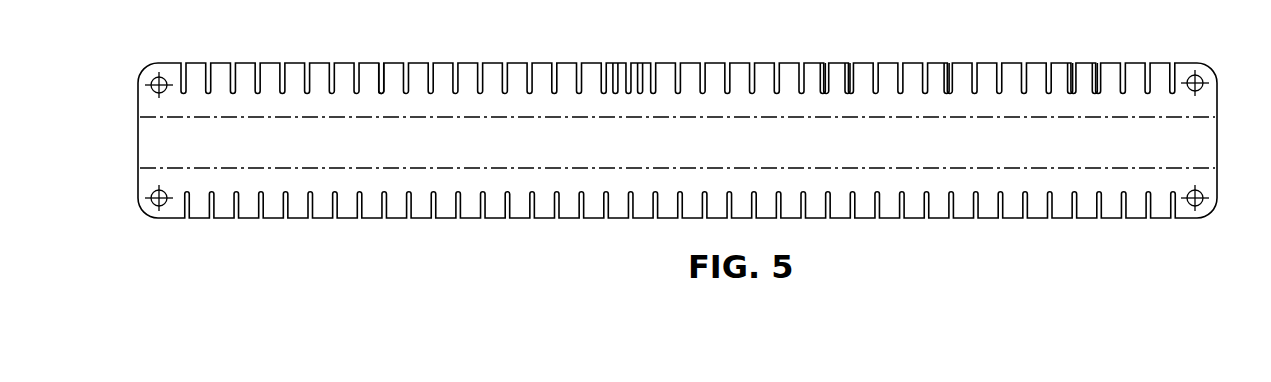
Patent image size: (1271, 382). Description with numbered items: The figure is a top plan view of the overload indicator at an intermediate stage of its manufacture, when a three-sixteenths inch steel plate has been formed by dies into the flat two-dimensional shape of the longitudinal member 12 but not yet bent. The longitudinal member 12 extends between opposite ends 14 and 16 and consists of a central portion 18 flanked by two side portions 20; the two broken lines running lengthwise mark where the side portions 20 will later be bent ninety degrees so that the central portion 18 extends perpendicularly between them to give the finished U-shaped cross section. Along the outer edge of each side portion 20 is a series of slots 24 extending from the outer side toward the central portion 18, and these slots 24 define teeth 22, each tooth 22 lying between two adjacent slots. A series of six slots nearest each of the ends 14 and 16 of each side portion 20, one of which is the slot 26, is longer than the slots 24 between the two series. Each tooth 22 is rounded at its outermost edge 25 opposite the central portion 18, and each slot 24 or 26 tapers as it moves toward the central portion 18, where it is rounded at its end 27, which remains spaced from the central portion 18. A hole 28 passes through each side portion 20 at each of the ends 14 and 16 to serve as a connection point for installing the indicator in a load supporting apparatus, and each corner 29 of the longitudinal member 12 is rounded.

The longitudinal member 12 is at (309, 138).
The end 14 is at (138, 138).
The end 16 is at (1218, 140).
The central portion 18 is at (493, 140).
The side portions 20 is at (767, 178).
The teeth 22 is at (615, 73).
The slots 24 is at (822, 82).
The outermost edge 25 is at (391, 64).
The slot 26 is at (1070, 76).
The end 27 is at (948, 90).
The hole 28 is at (163, 192).
The corner 29 is at (1195, 211).